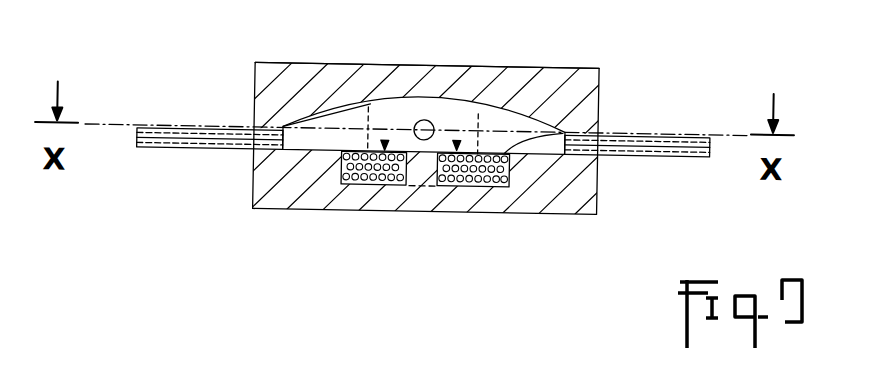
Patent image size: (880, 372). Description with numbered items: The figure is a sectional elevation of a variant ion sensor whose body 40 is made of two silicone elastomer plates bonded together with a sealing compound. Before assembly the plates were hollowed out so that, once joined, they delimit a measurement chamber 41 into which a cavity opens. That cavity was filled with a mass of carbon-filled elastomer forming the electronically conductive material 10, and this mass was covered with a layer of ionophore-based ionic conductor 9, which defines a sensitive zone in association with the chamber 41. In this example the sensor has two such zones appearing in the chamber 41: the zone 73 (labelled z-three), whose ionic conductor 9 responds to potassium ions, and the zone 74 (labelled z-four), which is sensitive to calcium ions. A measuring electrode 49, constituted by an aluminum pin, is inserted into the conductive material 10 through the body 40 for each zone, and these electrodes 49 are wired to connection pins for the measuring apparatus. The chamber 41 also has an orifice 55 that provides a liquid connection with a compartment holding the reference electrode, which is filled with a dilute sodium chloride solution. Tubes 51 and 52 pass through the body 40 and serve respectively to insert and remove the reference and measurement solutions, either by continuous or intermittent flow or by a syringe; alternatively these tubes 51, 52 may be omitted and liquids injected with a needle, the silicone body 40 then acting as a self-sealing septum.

The ionic conductor 9 is at (355, 146).
The electronically conductive material 10 is at (397, 188).
The body 40 is at (275, 179).
The measurement chamber 41 is at (495, 109).
The measuring electrode 49 is at (368, 188).
The tube 51 is at (665, 144).
The tube 52 is at (197, 132).
The orifice 55 is at (424, 120).
The sensitive zone z3 73 is at (385, 143).
The sensitive zone z4 74 is at (457, 142).